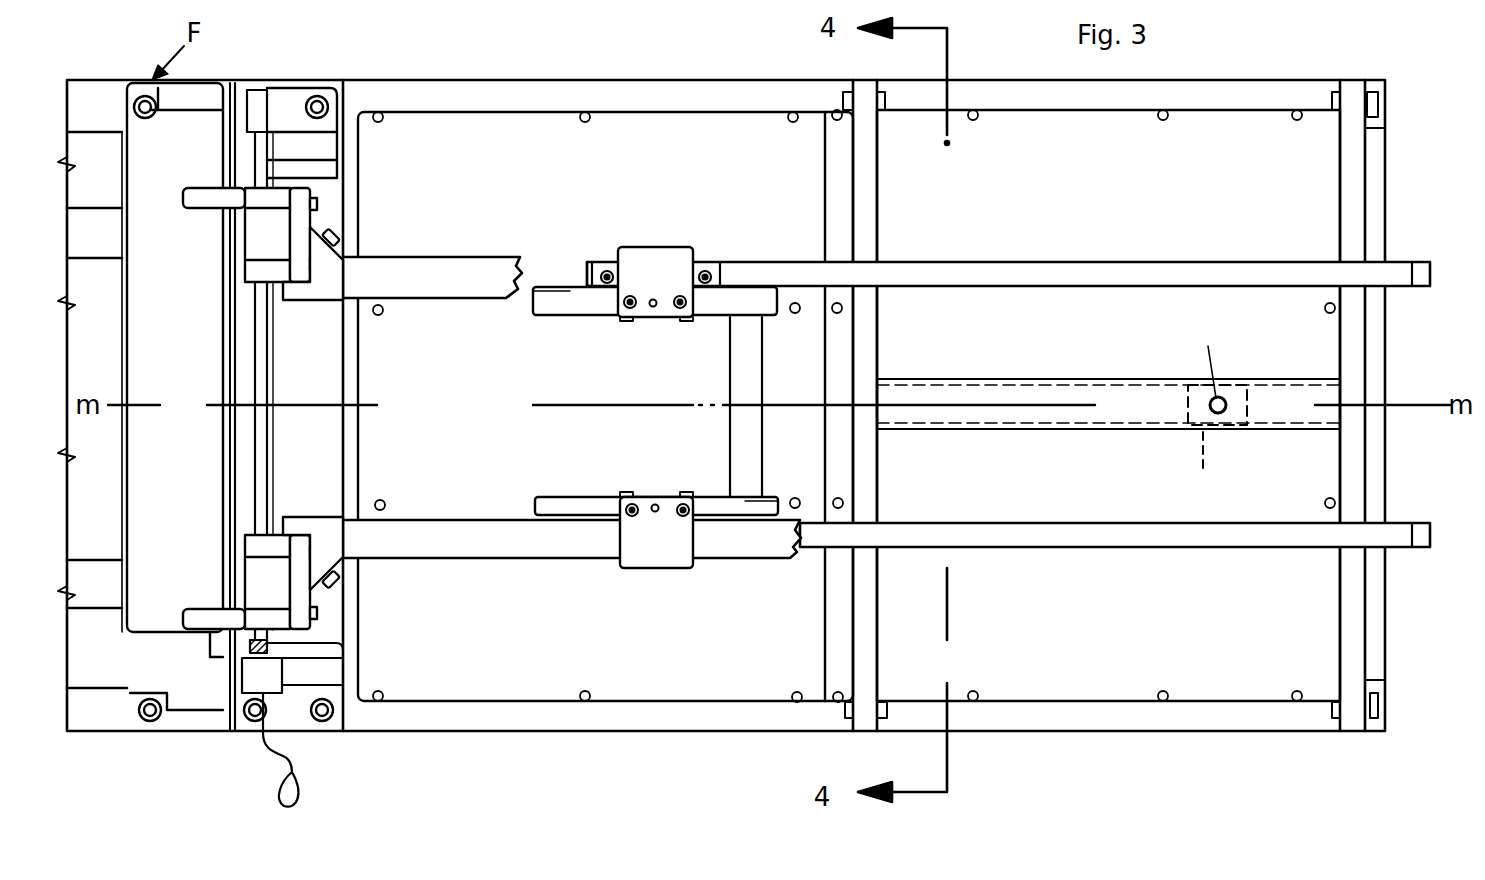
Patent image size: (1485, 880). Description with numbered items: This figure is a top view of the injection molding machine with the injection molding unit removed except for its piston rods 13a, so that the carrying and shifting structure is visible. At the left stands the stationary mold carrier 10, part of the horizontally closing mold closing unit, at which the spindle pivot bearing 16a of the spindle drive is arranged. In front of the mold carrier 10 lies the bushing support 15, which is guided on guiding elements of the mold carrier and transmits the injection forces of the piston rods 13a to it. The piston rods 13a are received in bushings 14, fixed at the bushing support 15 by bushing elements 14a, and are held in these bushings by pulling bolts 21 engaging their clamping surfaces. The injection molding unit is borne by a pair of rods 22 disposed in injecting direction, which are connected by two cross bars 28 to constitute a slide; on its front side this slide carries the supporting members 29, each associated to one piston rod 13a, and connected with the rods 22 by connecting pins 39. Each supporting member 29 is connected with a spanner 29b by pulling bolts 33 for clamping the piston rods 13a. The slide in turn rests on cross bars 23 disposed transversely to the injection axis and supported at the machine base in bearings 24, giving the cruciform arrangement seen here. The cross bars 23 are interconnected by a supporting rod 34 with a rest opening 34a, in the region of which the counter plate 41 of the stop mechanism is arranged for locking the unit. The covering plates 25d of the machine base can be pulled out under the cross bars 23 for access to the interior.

The stationary mold carrier 10 is at (170, 424).
The piston rods 13a is at (456, 272).
The bushings 14 is at (325, 304).
The bushing elements 14a is at (356, 238).
The bushing support 15 is at (275, 373).
The spindle pivot bearing 16a is at (253, 682).
The pulling bolts 21 is at (346, 225).
The pair of rods 22 is at (1025, 276).
The cross bars 23 is at (865, 219).
The bearing 24 is at (1385, 105).
The covering plates 25d is at (442, 424).
The cross bars 28 is at (750, 370).
The supporting members 29 is at (651, 253).
The spanner 29b is at (573, 314).
The pulling bolts 33 is at (634, 309).
The supporting rod 34 is at (1057, 387).
The rest opening 34a is at (1222, 413).
The connecting pins 39 is at (603, 271).
The counter plate 41 is at (1217, 442).